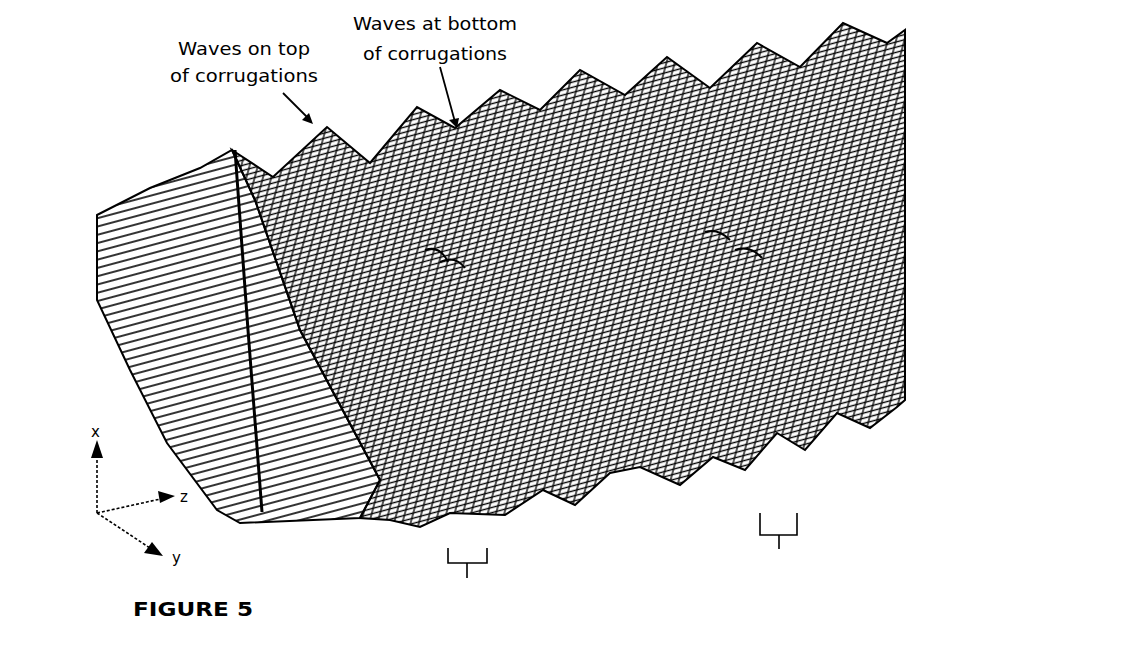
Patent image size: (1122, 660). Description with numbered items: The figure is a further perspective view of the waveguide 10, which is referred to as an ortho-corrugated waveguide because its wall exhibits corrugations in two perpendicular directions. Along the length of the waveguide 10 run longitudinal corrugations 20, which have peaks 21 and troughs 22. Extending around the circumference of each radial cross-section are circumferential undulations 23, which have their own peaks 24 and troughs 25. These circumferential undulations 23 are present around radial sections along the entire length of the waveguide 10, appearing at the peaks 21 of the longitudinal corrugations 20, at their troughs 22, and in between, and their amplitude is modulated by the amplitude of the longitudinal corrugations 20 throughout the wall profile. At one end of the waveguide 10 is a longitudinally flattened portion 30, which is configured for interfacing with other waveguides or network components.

The waveguide 10 is at (92, 194).
The longitudinally flattened portion 30 is at (210, 268).
The longitudinal corrugations 20 is at (778, 545).
The peaks 21 is at (718, 238).
The troughs 22 is at (748, 262).
The circumferential undulations 23 is at (467, 580).
The peaks 24 is at (430, 252).
The troughs 25 is at (447, 258).